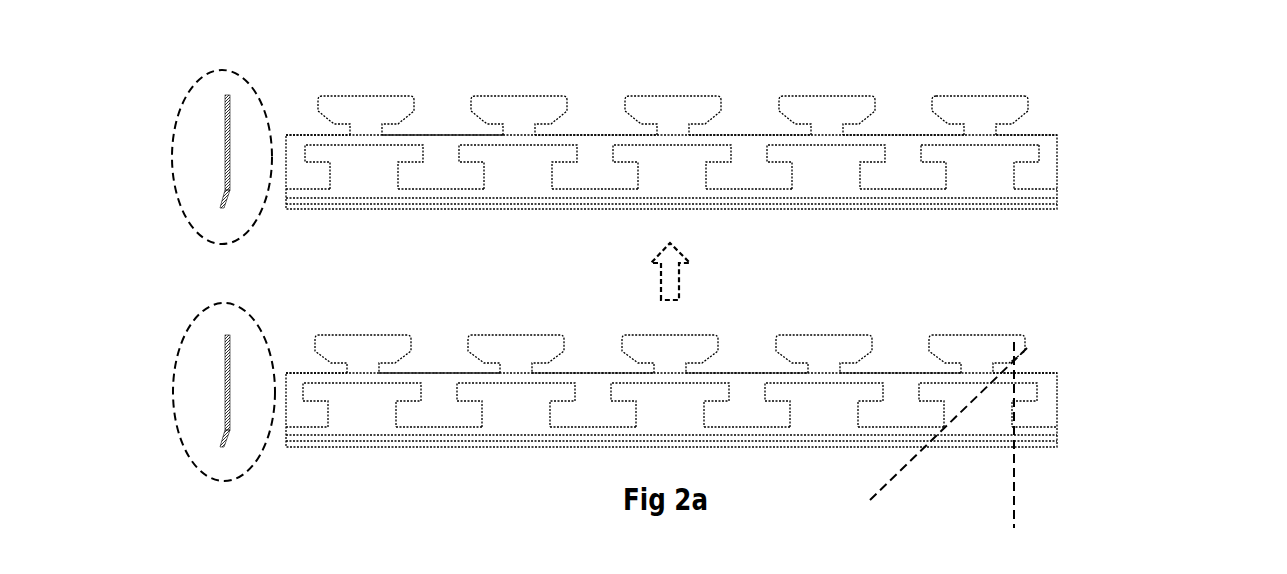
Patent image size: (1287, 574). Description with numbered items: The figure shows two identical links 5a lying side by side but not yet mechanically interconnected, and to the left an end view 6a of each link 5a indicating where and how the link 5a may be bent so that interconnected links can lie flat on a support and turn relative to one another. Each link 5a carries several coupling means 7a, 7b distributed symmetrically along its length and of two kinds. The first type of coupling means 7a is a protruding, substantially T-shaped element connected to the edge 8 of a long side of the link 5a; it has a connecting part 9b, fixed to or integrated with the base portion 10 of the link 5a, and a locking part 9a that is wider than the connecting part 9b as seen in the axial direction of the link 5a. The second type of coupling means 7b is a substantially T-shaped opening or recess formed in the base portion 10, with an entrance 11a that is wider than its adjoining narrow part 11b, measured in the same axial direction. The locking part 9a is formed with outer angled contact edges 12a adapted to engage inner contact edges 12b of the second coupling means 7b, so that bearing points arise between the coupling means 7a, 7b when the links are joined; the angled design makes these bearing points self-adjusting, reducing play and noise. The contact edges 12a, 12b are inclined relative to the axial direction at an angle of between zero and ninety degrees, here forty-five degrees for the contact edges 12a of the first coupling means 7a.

The link 5a is at (1077, 195).
The end view 6a is at (172, 155).
The first type of coupling means 7a is at (1002, 81).
The second type of coupling means 7b is at (966, 210).
The edge 8 is at (752, 133).
The locking part 9a is at (937, 101).
The connecting part 9b is at (990, 130).
The base portion 10 is at (1054, 175).
The entrance 11a is at (1025, 158).
The narrow part 11b is at (945, 188).
The outer angled contact edges 12a is at (858, 358).
The inner contact edges 12b is at (858, 428).